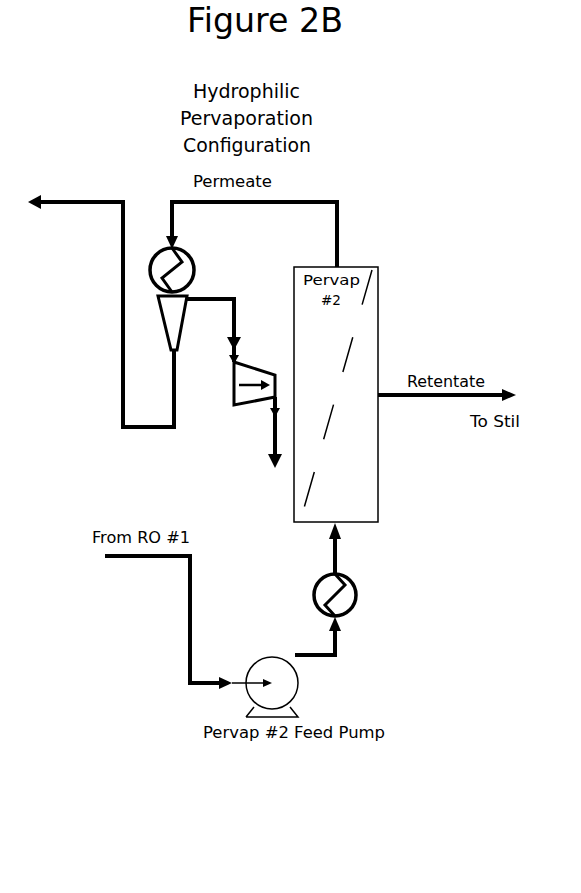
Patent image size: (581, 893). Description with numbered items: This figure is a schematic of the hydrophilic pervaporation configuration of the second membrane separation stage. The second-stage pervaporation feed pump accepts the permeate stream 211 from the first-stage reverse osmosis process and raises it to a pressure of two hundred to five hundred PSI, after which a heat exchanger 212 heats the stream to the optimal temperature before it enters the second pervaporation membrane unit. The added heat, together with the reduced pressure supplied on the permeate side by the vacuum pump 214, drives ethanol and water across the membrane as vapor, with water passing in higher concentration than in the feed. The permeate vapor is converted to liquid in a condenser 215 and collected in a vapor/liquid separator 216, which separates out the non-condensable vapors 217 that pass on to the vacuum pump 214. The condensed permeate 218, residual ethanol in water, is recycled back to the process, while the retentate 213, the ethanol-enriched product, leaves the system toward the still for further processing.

The permeate stream 211 is at (162, 560).
The heat exchanger 212 is at (360, 597).
The retentate 213 is at (464, 401).
The vacuum pump 214 is at (255, 366).
The condenser 215 is at (196, 257).
The vapor/liquid separator 216 is at (178, 352).
The non-condensable vapors 217 is at (268, 419).
The permeate 218 is at (118, 319).